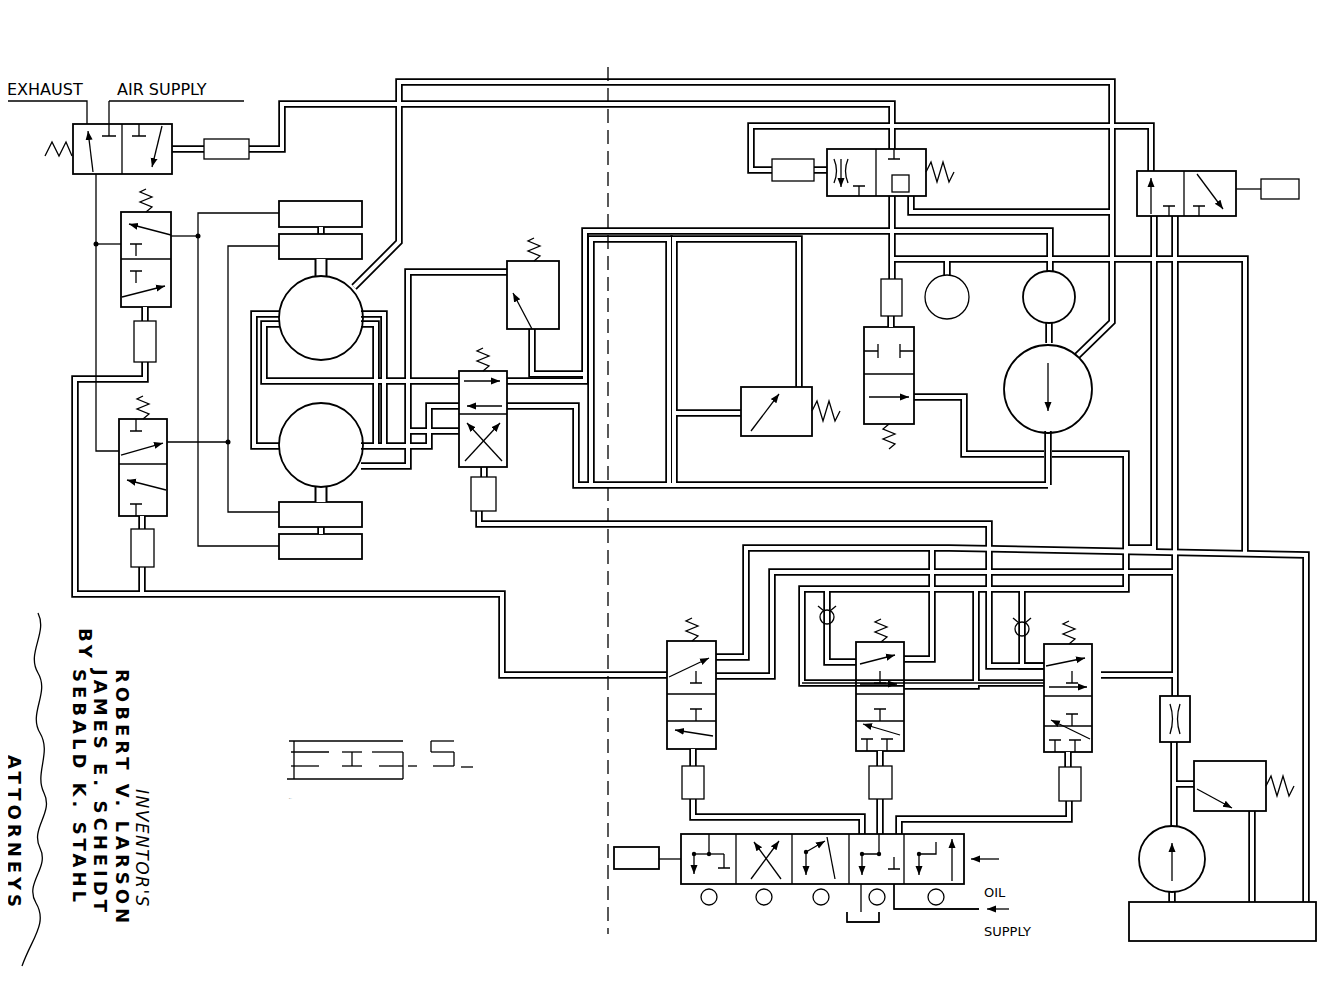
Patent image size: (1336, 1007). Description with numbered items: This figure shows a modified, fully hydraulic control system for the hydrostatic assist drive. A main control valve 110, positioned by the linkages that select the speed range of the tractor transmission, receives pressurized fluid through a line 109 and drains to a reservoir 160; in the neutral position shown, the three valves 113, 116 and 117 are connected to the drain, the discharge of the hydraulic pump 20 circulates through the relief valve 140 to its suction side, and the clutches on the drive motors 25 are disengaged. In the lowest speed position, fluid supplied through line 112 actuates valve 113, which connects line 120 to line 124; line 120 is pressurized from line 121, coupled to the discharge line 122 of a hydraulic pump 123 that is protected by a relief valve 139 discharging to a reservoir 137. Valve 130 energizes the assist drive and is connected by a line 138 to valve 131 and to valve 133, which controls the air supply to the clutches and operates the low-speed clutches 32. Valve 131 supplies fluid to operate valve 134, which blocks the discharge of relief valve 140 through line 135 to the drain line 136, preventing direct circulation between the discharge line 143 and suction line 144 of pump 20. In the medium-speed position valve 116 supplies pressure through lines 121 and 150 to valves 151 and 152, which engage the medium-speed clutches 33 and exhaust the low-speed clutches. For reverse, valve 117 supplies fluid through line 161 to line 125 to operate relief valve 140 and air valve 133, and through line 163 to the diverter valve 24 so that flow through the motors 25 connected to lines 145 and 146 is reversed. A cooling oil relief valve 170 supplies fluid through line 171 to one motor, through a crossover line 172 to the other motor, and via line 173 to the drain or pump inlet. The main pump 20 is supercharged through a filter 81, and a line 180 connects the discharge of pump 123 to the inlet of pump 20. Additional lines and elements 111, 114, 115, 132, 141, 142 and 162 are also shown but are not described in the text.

The valve 133 is at (173, 173).
The valve 152 is at (120, 303).
The valve 151 is at (120, 515).
The medium-speed clutch 33 is at (355, 202).
The low-speed clutch 32 is at (363, 248).
The hydrostatic drive motor 25 is at (292, 296).
The line 173 is at (404, 142).
The cooling oil relief valve 170 is at (540, 262).
The line 171 is at (435, 278).
The crossover line 172 is at (350, 355).
The line 146 is at (433, 382).
The line 145 is at (432, 450).
The flow-diverting valve 24 is at (510, 466).
The air supply conduit 132 is at (708, 106).
The valve 131 is at (828, 190).
The line 138 is at (1052, 130).
The valve 130 is at (1175, 175).
The suction line 144 is at (767, 240).
The conduit 142 is at (797, 330).
The conduit 141 is at (728, 410).
The relief valve 140 is at (770, 438).
The valve 134 is at (870, 330).
The line 135 is at (935, 400).
The filter 81 is at (1030, 313).
The hydraulic pump 20 is at (1030, 422).
The line 125 is at (1147, 437).
The line 180 is at (1247, 348).
The discharge line 143 is at (885, 490).
The line 163 is at (990, 528).
The line 121 is at (1040, 573).
The drain line 136 is at (1305, 625).
The line 150 is at (506, 618).
The valve 116 is at (717, 725).
The line 124 is at (832, 665).
The line 120 is at (975, 678).
The line 161 is at (1028, 688).
The conduit 162 is at (1163, 672).
The valve 113 is at (905, 730).
The valve 117 is at (1093, 727).
The relief valve 139 is at (1265, 753).
The discharge line 122 is at (1168, 765).
The conduit 114 is at (728, 818).
The line 112 is at (888, 818).
The conduit 115 is at (982, 820).
The hydraulic pump 123 is at (1150, 845).
The main control valve 110 is at (978, 857).
The selector actuator 111 is at (620, 870).
The reservoir 160 is at (845, 920).
The line 109 is at (905, 912).
The reservoir 137 is at (1133, 905).